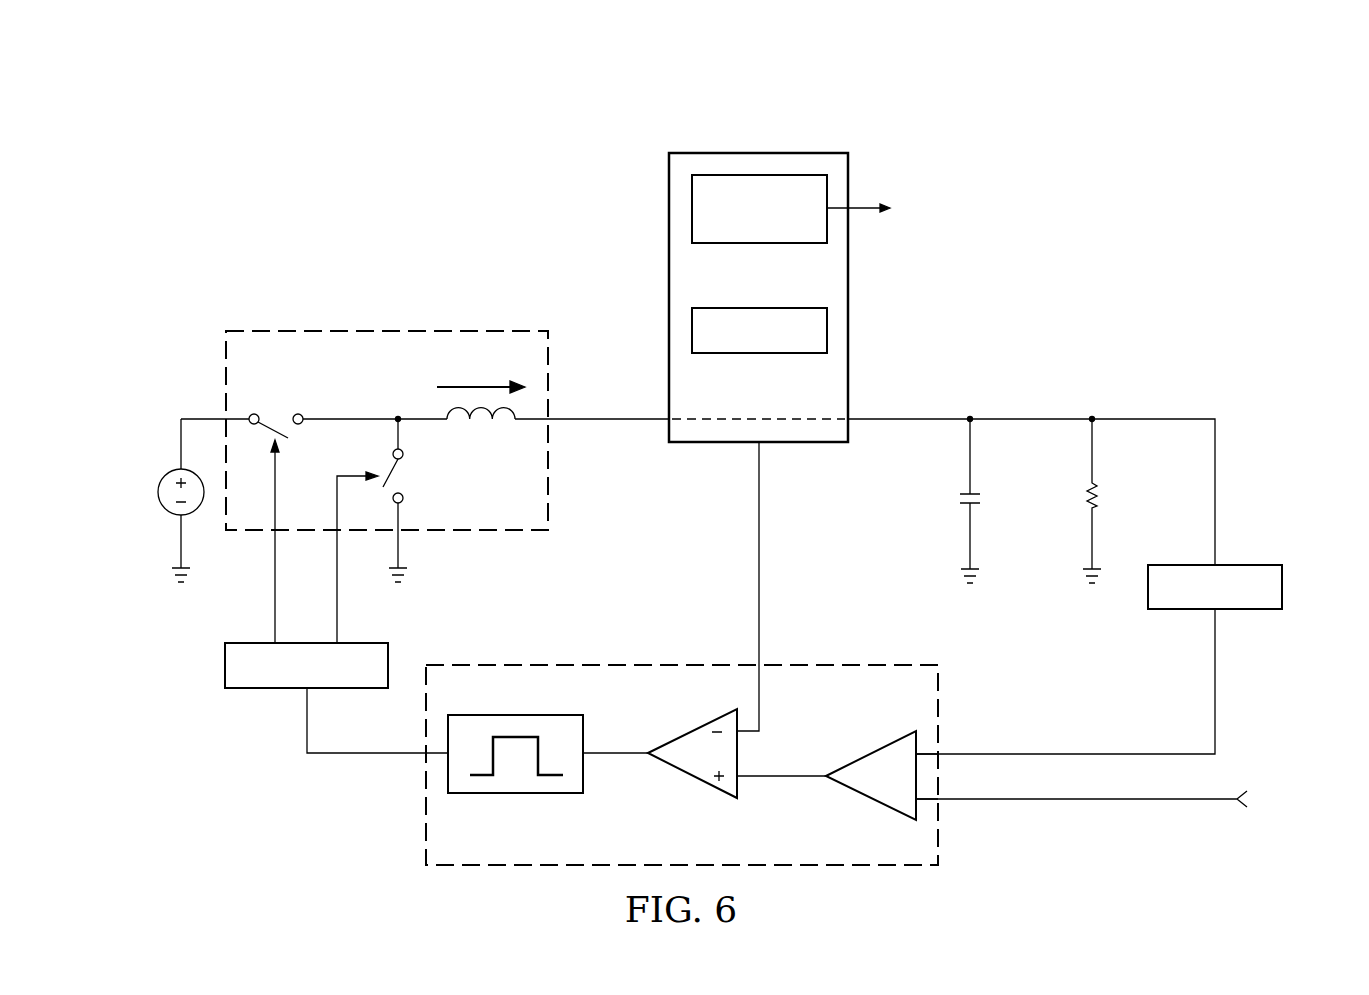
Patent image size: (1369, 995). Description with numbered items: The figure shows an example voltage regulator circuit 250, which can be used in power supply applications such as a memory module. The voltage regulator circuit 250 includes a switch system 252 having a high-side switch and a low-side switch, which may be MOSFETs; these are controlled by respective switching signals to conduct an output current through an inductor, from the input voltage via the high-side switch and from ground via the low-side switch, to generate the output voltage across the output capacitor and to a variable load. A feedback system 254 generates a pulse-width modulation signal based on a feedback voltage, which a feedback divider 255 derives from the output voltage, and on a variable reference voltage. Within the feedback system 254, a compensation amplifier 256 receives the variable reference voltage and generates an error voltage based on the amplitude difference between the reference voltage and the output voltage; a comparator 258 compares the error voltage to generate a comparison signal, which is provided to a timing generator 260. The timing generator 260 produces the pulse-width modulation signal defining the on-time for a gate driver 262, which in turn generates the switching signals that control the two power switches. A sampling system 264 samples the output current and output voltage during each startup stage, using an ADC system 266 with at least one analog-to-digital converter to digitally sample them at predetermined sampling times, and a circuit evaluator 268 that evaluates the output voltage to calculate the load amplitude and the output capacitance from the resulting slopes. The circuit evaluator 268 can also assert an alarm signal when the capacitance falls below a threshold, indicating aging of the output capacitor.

The voltage regulator circuit 250 is at (404, 133).
The switch system 252 is at (358, 322).
The feedback system 254 is at (640, 765).
The feedback divider 255 is at (1282, 587).
The compensation amplifier 256 is at (868, 802).
The comparator 258 is at (688, 780).
The timing generator 260 is at (513, 795).
The gate driver 262 is at (225, 665).
The sampling system 264 is at (817, 263).
The ADC system 266 is at (737, 308).
The circuit evaluator 268 is at (781, 244).